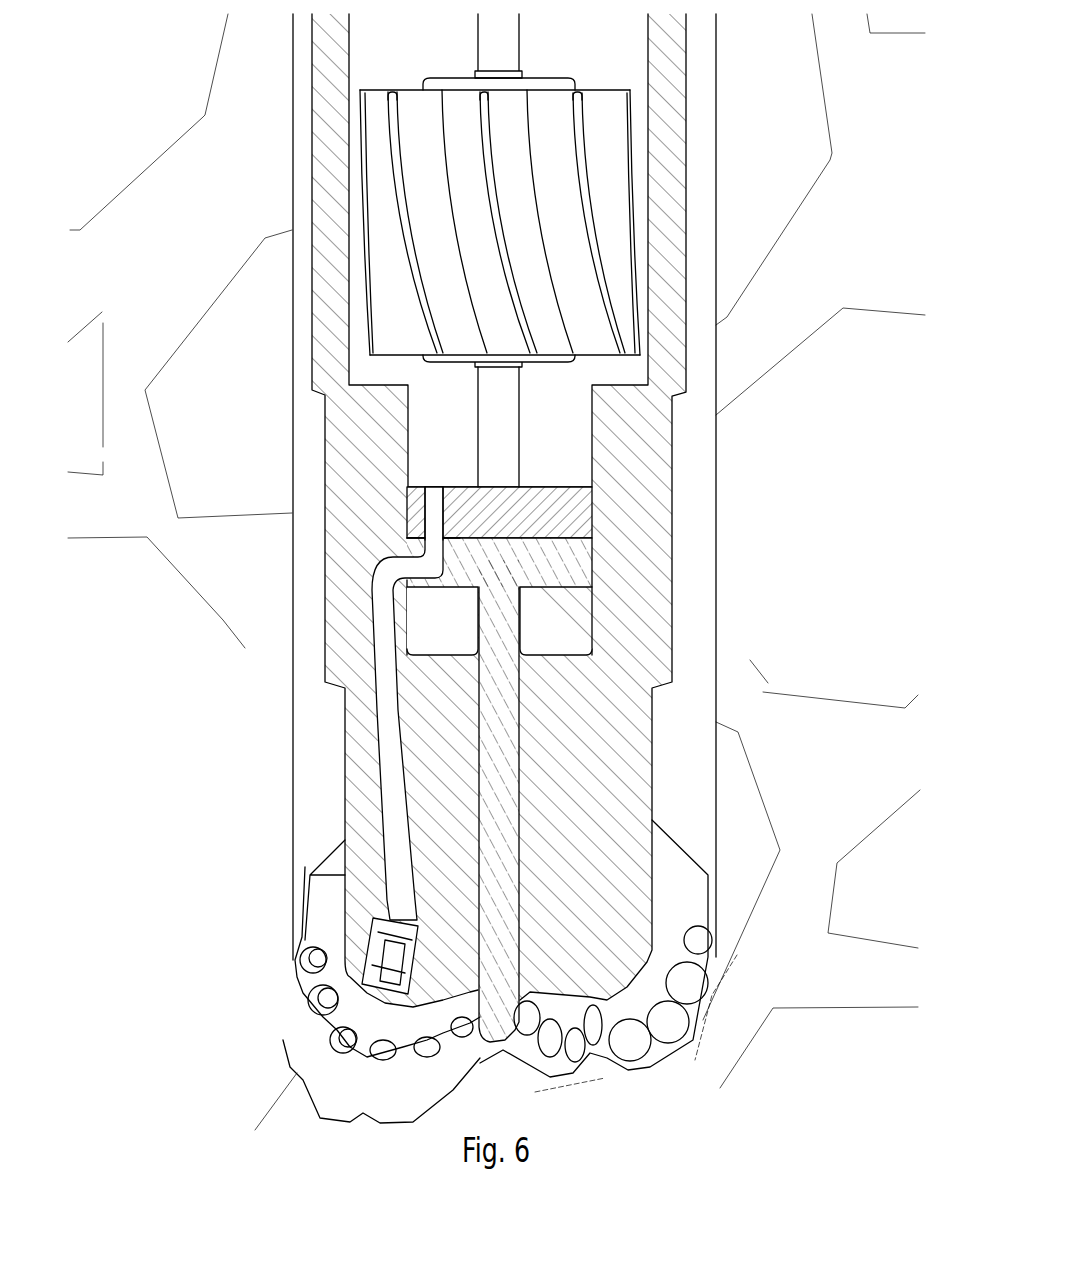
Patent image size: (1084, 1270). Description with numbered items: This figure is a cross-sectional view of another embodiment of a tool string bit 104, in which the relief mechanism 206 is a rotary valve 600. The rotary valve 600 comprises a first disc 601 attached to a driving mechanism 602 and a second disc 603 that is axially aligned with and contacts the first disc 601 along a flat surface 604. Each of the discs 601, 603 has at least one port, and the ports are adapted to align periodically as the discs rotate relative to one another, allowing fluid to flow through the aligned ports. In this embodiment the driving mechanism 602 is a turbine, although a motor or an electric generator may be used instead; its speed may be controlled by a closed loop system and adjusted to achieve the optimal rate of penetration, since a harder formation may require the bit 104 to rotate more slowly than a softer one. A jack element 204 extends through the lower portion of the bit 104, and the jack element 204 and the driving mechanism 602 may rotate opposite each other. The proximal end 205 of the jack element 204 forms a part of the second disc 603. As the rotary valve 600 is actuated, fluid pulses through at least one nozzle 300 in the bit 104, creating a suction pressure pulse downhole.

The bit 104 is at (258, 160).
The driving mechanism 602 is at (722, 218).
The relief mechanism 206 is at (336, 462).
The flat surface 604 is at (553, 537).
The first disc 601 is at (413, 507).
The rotary valve 600 is at (386, 529).
The second disc 603 is at (413, 546).
The proximal end 205 is at (580, 608).
The jack element 204 is at (510, 797).
The nozzle 300 is at (383, 918).